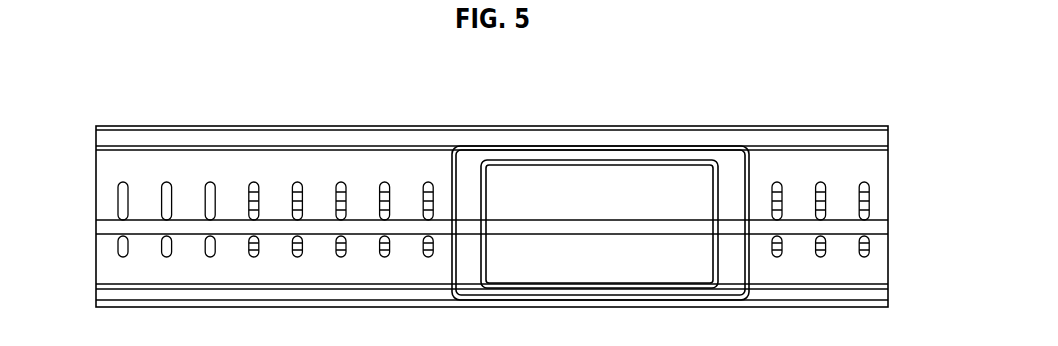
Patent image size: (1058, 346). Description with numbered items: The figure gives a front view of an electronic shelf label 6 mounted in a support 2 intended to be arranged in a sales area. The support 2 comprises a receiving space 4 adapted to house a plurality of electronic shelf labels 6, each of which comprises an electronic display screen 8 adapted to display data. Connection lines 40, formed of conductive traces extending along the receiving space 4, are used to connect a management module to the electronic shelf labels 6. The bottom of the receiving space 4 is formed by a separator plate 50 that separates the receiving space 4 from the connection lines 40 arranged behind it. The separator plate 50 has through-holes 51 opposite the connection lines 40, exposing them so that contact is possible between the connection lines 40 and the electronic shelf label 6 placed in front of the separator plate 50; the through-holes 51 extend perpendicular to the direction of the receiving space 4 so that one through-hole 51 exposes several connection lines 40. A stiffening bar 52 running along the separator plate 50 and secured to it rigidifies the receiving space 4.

The support 2 is at (733, 104).
The receiving space 4 is at (843, 170).
The electronic shelf label 6 is at (597, 157).
The electronic display screen 8 is at (597, 260).
The connection lines 40 is at (342, 194).
The separator plate 50 is at (193, 170).
The through-holes 51 is at (350, 198).
The stiffening bar 52 is at (837, 227).